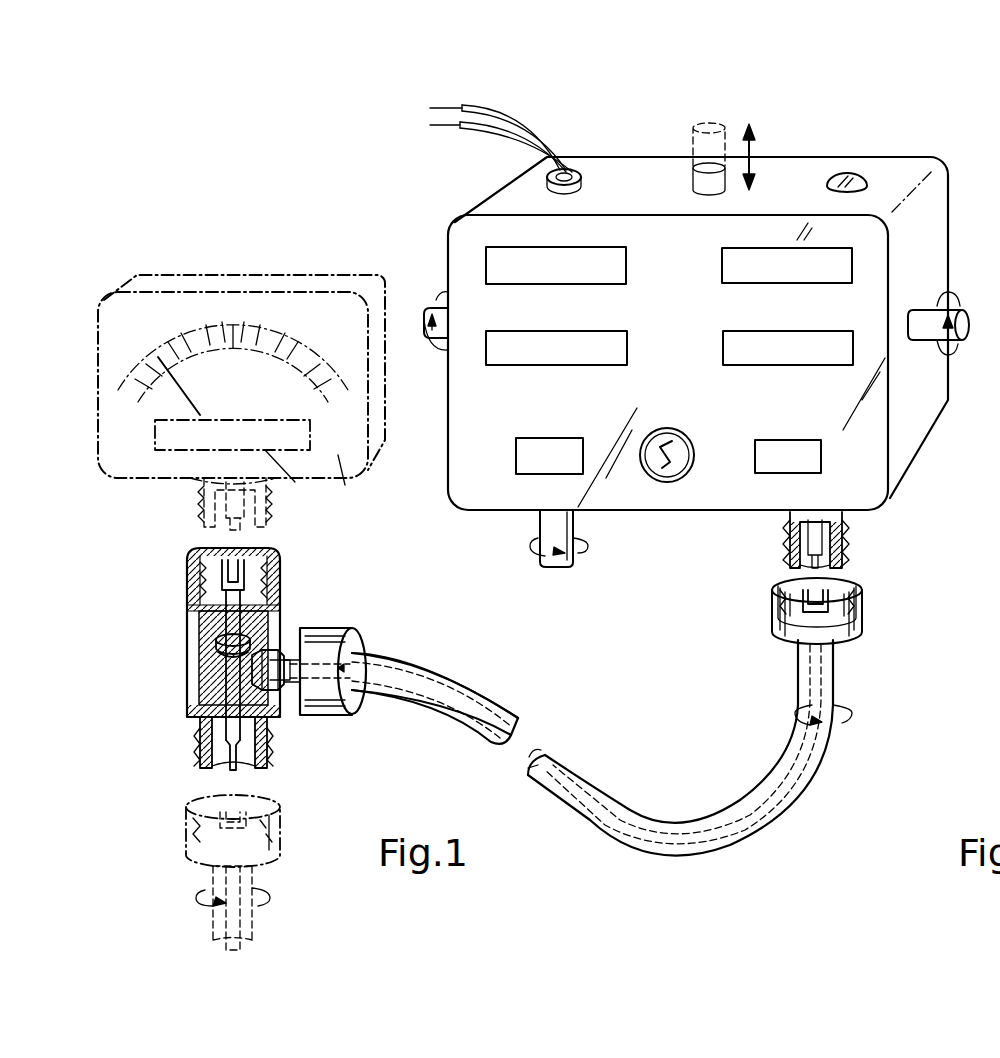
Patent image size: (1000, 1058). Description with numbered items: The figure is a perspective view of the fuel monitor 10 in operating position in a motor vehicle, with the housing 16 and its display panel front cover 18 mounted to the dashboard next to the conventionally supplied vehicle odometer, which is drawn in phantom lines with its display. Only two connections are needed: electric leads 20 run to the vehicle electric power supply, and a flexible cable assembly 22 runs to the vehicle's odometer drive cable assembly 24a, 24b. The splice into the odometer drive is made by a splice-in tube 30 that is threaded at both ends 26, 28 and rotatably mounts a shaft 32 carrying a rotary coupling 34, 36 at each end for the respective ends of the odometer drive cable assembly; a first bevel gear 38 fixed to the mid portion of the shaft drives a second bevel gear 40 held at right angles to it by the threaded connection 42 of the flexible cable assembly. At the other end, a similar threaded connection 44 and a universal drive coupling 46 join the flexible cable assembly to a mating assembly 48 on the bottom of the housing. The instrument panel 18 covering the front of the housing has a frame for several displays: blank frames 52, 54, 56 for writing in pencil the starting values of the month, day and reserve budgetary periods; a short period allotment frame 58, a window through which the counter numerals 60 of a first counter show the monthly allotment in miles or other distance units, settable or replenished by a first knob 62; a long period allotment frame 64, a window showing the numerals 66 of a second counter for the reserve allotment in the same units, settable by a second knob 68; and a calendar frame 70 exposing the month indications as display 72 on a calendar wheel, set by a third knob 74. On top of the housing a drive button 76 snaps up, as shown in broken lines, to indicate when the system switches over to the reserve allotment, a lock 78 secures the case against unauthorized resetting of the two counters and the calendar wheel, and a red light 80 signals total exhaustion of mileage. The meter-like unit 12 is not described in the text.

The fuel monitor 10 is at (432, 266).
The meter 12 is at (241, 390).
The housing 16 is at (478, 191).
The display panel front cover 18 is at (462, 243).
The electric leads 20 is at (406, 98).
The flexible cable assembly 22 is at (597, 772).
The odometer drive cable assembly 24a is at (182, 872).
The odometer drive cable assembly 24b is at (200, 514).
The threaded end 26 is at (280, 581).
The threaded end 28 is at (262, 768).
The splice-in tube 30 is at (188, 648).
The shaft 32 is at (228, 620).
The rotary coupling 34 is at (222, 575).
The rotary coupling 36 is at (230, 768).
The first bevel gear 38 is at (226, 655).
The second bevel gear 40 is at (283, 640).
The threaded connection 42 is at (284, 700).
The threaded connection 44 is at (865, 602).
The universal drive coupling 46 is at (800, 598).
The mating assembly 48 is at (850, 548).
The blank frame 52 is at (626, 256).
The blank frame 54 is at (722, 268).
The blank frame 56 is at (790, 440).
The short period allotment frame 58 is at (562, 324).
The counter numerals 60 is at (610, 350).
The first knob 62 is at (430, 323).
The long period allotment frame 64 is at (772, 332).
The numerals 66 is at (762, 347).
The second knob 68 is at (963, 318).
The calendar frame 70 is at (555, 438).
The display 72 is at (525, 458).
The third knob 74 is at (546, 560).
The drive button 76 is at (700, 172).
The lock 78 is at (682, 433).
The red light 80 is at (850, 175).